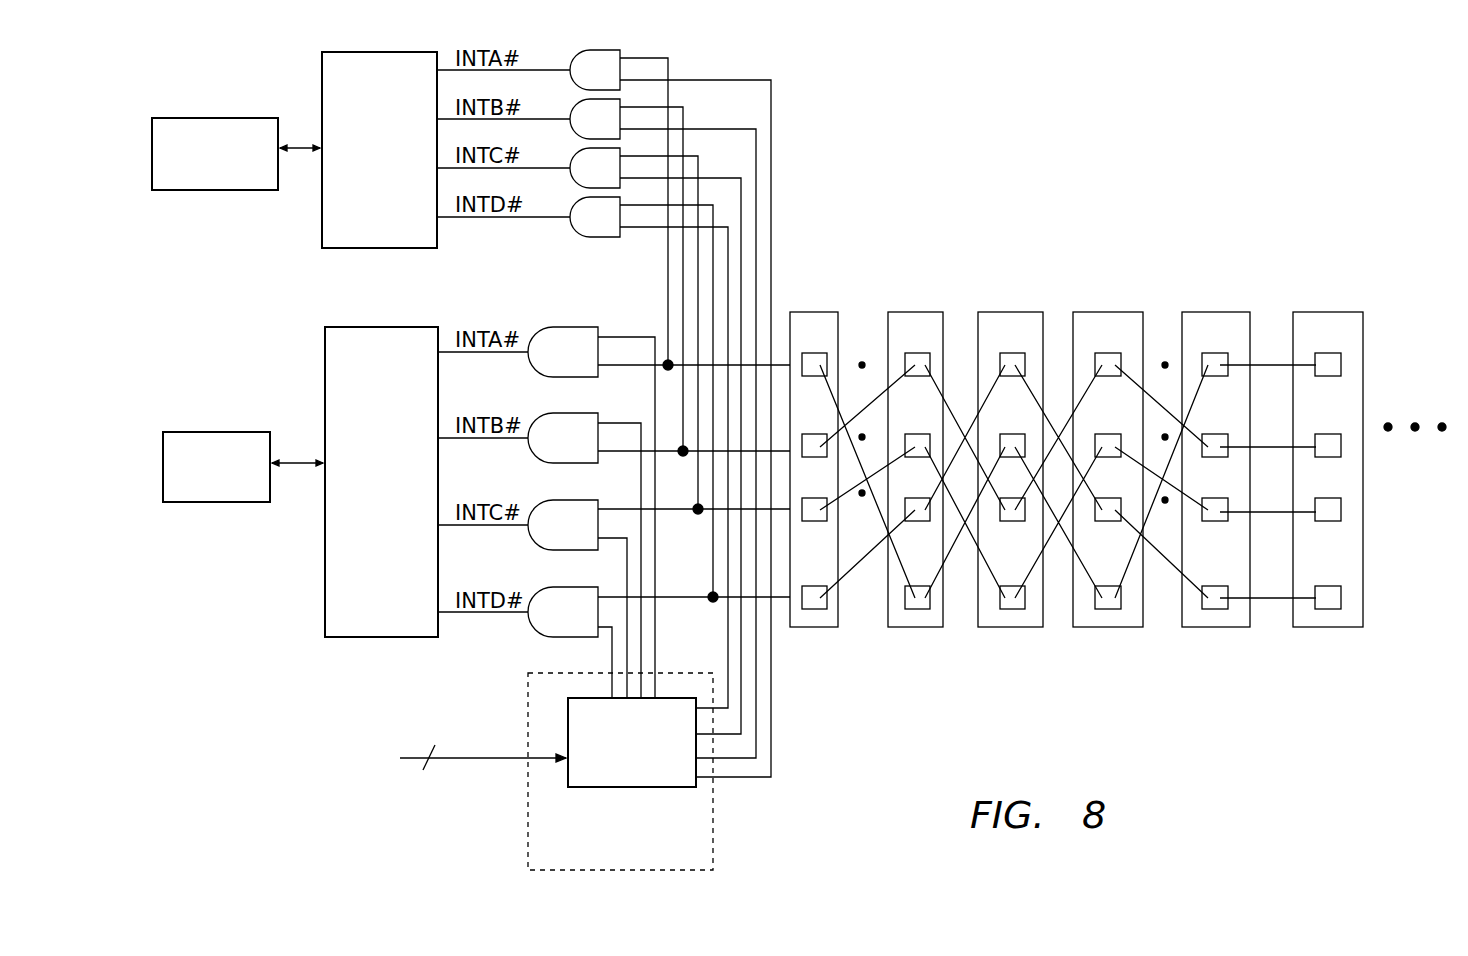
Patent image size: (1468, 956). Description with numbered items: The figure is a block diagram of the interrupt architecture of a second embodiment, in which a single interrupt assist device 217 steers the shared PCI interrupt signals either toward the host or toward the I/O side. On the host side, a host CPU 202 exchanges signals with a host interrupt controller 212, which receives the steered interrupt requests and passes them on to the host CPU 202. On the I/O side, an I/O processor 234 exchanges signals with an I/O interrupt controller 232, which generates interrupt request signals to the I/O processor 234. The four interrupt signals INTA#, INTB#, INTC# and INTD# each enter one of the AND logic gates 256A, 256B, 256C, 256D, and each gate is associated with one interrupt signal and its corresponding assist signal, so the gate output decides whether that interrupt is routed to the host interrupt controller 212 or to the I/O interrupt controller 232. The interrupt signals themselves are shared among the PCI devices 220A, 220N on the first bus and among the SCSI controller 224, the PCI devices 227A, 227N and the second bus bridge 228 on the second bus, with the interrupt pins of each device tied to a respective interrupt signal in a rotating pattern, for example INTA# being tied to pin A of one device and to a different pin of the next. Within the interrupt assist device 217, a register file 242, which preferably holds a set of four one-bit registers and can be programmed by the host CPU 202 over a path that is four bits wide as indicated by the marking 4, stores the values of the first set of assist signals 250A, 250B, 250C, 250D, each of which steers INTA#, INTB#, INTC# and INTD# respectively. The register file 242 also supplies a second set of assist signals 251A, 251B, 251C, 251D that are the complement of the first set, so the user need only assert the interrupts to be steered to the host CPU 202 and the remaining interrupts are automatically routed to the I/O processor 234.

The host CPU 202 is at (212, 432).
The host interrupt controller 212 is at (344, 327).
The interrupt assist device 217 is at (590, 771).
The PCI device 220A is at (813, 312).
The PCI device 220N is at (915, 312).
The SCSI controller 224 is at (1013, 312).
The PCI device 227A is at (1108, 312).
The PCI device 227N is at (1215, 312).
The second bus bridge 228 is at (1328, 312).
The I/O interrupt controller 232 is at (322, 68).
The I/O processor 234 is at (199, 118).
The register file 242 is at (568, 715).
The assist signal 250A is at (634, 337).
The assist signal 250B is at (643, 395).
The assist signal 250C is at (628, 612).
The assist signal 250D is at (612, 657).
The second set assist signal 251A is at (748, 777).
The second set assist signal 251B is at (742, 755).
The second set assist signal 251C is at (730, 732).
The second set assist signal 251D is at (723, 700).
The AND logic gate 256A is at (564, 327).
The AND logic gate 256B is at (546, 413).
The AND logic gate 256C is at (555, 500).
The AND logic gate 256D is at (556, 587).
The bus width indicator 4 is at (483, 747).